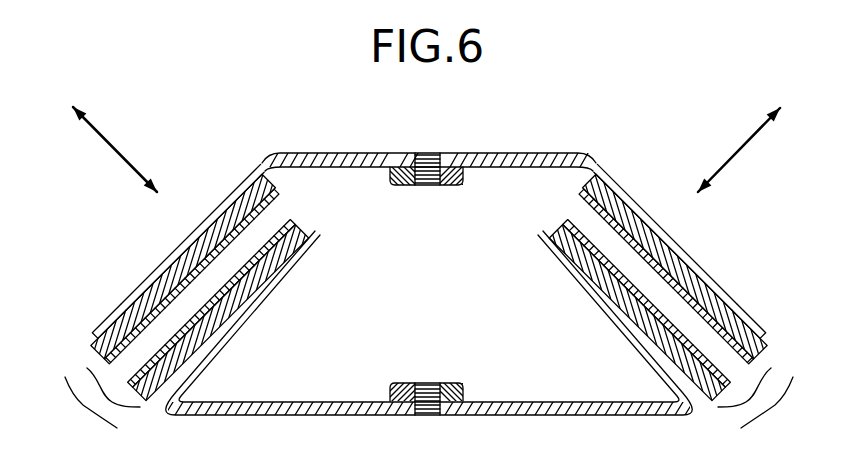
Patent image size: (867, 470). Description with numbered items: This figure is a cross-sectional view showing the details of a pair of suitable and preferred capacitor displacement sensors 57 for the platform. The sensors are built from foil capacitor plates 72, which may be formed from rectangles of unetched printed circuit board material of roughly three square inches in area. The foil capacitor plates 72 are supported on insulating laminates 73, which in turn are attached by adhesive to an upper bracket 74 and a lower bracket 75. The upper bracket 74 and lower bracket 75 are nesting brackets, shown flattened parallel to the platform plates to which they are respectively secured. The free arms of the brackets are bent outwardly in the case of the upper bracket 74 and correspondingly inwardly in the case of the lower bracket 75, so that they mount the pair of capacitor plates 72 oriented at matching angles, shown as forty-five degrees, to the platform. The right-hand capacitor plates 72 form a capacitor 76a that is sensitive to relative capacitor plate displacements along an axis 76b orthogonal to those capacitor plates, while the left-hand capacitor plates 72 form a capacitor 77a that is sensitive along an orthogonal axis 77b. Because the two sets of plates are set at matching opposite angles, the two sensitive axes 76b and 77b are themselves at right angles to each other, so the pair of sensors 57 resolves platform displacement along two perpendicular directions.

The capacitor displacement sensors 57 is at (355, 122).
The foil capacitor plates 72 is at (281, 222).
The insulating laminates 73 is at (88, 367).
The upper bracket 74 is at (493, 153).
The lower bracket 75 is at (352, 415).
The capacitor 76a is at (780, 405).
The axis 76b is at (743, 150).
The capacitor 77a is at (85, 407).
The axis 77b is at (118, 158).